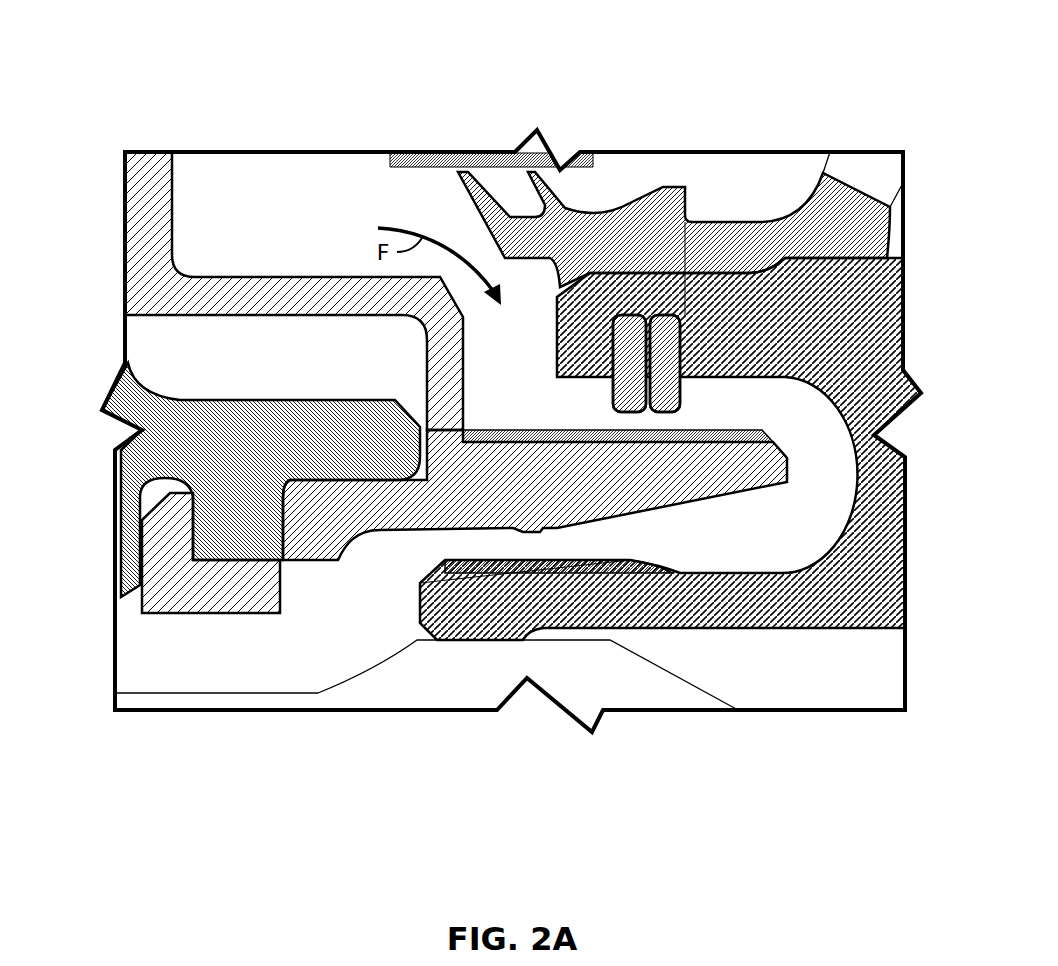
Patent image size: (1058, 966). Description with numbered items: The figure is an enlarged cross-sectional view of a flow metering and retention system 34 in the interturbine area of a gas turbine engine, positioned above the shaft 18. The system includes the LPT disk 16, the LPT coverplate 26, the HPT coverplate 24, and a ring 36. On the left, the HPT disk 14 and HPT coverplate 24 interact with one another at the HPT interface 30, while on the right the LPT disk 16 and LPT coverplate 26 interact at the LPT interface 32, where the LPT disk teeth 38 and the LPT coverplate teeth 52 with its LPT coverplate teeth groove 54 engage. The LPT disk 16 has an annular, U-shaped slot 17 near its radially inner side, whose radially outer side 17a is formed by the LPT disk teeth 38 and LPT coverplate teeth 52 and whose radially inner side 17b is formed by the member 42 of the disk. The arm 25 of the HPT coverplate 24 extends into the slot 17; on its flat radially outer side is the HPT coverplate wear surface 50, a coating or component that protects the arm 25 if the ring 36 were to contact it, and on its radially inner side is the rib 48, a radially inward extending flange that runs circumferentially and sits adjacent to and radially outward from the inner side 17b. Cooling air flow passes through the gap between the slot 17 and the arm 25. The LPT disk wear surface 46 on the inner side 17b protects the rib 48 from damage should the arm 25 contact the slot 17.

The flow metering and retention system 34 is at (293, 108).
The HPT coverplate 24 is at (140, 258).
The HPT disk 14 is at (133, 467).
The HPT interface 30 is at (165, 622).
The LPT disk 16 is at (873, 523).
The HPT coverplate wear surface 50 is at (584, 431).
The LPT interface 32 is at (772, 330).
The LPT disk teeth 38 is at (743, 313).
The LPT coverplate teeth groove 54 is at (690, 317).
The arm 25 is at (870, 597).
The slot 17 is at (850, 431).
The radially outer side 17a is at (587, 377).
The radially inner side 17b is at (687, 568).
The member 42 is at (433, 607).
The LPT disk wear surface 46 is at (572, 572).
The rib 48 is at (642, 568).
The LPT coverplate 26 is at (863, 227).
The ring 36 is at (677, 397).
The LPT coverplate teeth 52 is at (567, 280).
The shaft 18 is at (377, 695).